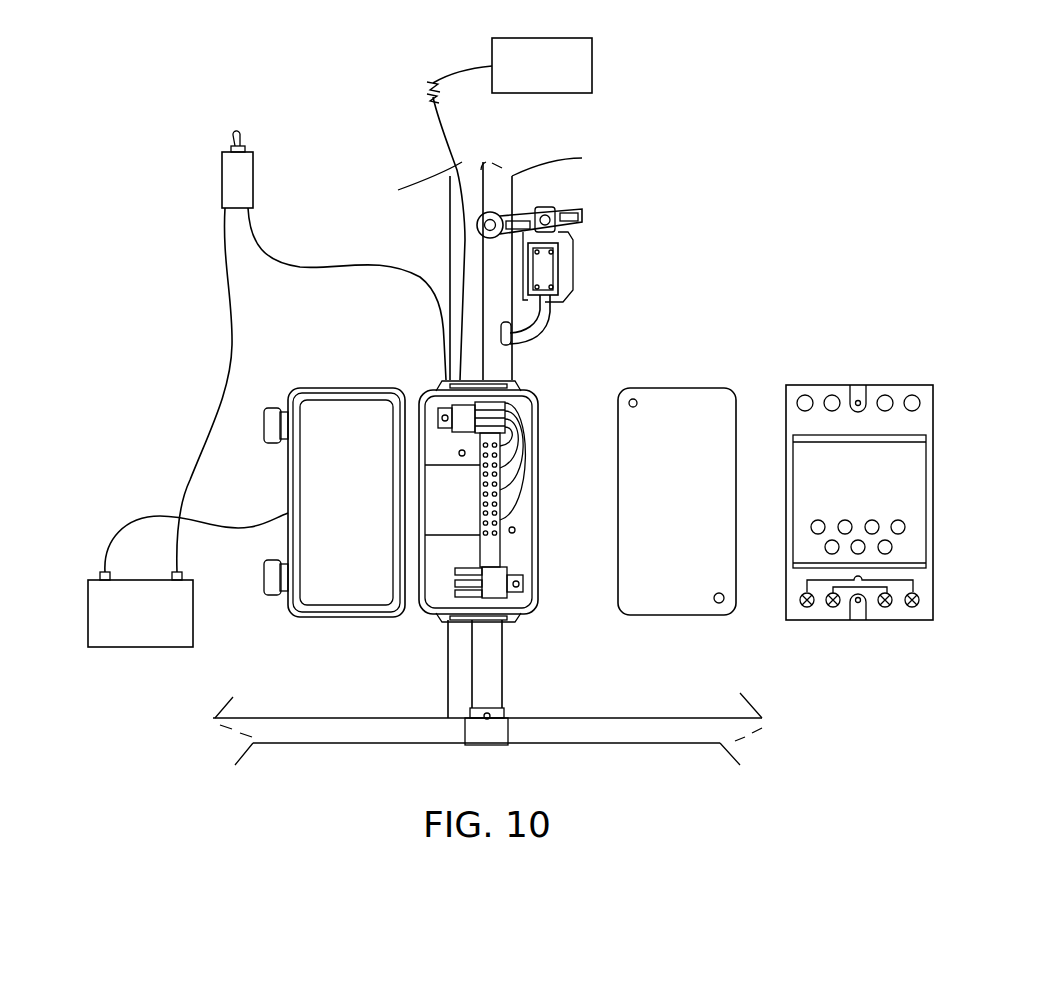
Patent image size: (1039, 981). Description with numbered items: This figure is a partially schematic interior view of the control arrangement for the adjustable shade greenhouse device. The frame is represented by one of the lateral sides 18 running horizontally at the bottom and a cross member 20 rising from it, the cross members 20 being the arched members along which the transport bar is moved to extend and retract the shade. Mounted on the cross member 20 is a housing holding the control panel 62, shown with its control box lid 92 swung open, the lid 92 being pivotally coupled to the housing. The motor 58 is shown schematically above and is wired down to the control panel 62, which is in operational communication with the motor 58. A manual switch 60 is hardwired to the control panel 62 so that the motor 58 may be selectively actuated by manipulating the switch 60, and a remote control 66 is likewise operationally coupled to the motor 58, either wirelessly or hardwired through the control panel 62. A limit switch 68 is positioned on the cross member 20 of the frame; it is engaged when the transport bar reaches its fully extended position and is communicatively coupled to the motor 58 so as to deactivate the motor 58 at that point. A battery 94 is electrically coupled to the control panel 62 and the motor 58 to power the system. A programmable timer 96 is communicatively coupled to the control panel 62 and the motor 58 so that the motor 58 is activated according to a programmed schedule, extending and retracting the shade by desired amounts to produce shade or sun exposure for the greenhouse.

The lateral sides 18 is at (608, 735).
The cross members 20 is at (452, 676).
The motor 58 is at (573, 53).
The manual switch 60 is at (240, 170).
The control panel 62 is at (518, 402).
The remote control 66 is at (443, 520).
The limit switch 68 is at (565, 247).
The control box lid 92 is at (328, 404).
The battery 94 is at (118, 635).
The timer 96 is at (910, 482).